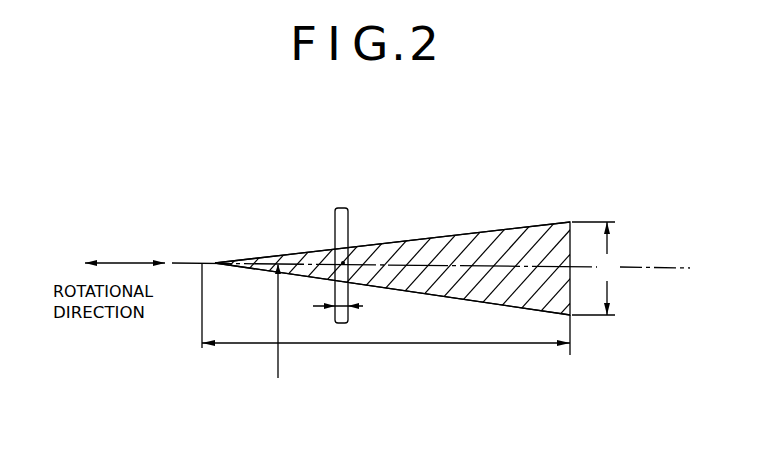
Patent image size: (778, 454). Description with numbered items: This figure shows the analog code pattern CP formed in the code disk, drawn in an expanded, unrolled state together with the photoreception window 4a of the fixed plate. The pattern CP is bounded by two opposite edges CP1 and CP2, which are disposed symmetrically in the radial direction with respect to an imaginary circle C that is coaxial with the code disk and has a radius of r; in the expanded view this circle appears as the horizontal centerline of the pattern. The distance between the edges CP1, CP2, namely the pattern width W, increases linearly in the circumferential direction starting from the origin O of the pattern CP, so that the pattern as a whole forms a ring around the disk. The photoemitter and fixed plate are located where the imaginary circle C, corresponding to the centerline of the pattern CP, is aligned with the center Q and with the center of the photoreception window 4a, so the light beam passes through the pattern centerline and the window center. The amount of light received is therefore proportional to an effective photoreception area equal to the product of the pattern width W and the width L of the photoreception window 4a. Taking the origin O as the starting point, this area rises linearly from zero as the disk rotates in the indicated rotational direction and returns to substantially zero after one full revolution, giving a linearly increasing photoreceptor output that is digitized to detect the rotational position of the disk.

The photoreception window 4a is at (339, 222).
The center Q is at (344, 262).
The code pattern CP is at (528, 219).
The edge of the pattern CP1 is at (487, 228).
The edge of the pattern CP2 is at (480, 303).
The imaginary circle C is at (672, 270).
The origin of the pattern O is at (203, 292).
The pattern width W is at (596, 268).
The width of the photoreception window L is at (347, 307).
The radius of the imaginary circle r is at (279, 333).